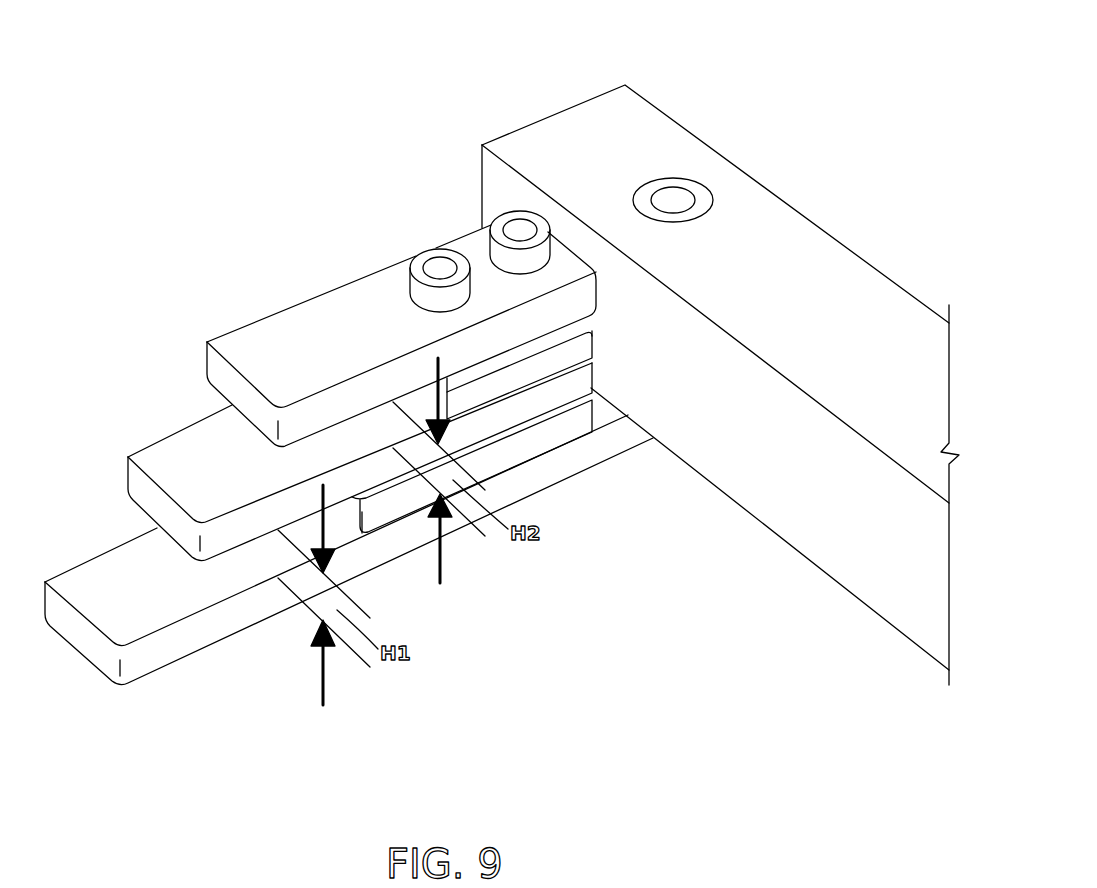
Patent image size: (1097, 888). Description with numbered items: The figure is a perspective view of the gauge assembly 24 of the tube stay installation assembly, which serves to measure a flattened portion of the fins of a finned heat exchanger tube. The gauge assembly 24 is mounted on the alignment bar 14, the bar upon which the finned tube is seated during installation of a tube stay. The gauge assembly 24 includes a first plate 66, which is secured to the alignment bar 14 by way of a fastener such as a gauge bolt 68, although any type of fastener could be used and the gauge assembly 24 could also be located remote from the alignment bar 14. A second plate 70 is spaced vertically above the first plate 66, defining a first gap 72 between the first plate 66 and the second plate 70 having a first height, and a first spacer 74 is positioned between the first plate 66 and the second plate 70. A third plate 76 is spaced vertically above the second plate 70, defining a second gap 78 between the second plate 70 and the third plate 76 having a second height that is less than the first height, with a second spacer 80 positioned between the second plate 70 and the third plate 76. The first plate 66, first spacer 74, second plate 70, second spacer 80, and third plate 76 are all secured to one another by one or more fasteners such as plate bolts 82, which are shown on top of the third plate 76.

The alignment bar 14 is at (834, 337).
The gauge assembly 24 is at (625, 80).
The gauge bolt 68 is at (674, 196).
The first plate 66 is at (158, 620).
The second plate 70 is at (150, 462).
The first gap 72 is at (142, 519).
The first spacer 74 is at (563, 433).
The third plate 76 is at (356, 298).
The second gap 78 is at (213, 401).
The second spacer 80 is at (577, 352).
The plate bolts 82 is at (512, 230).